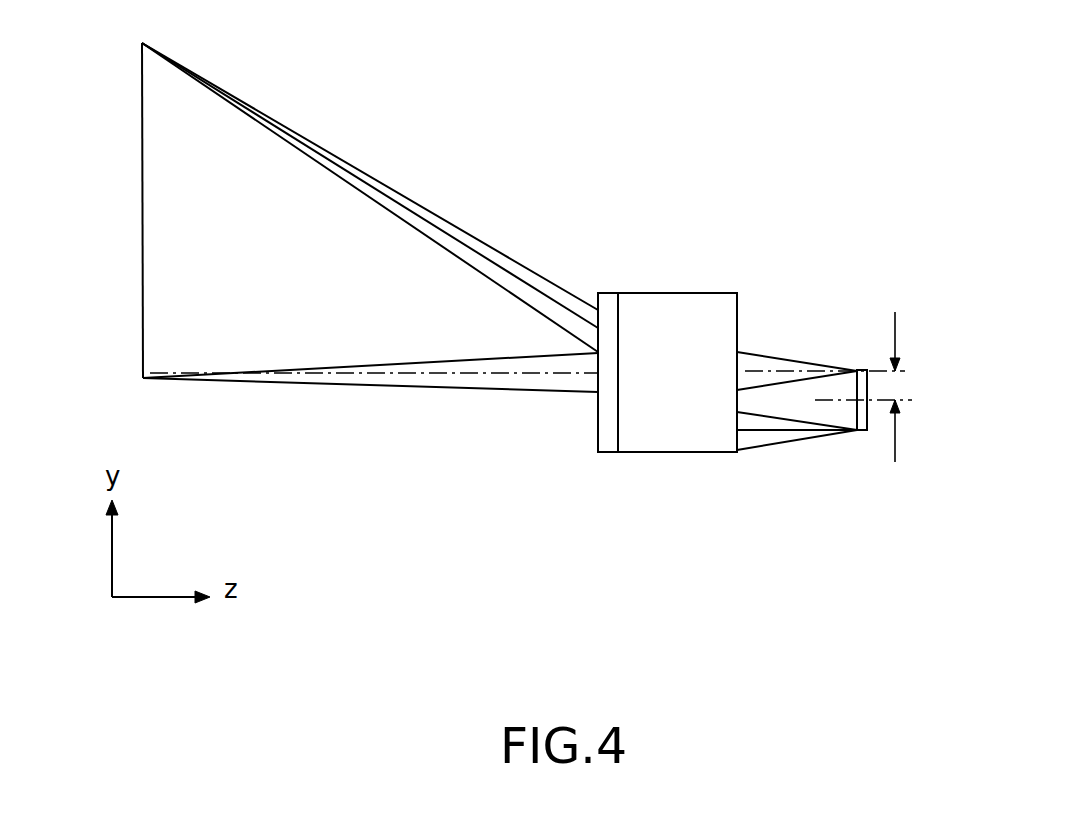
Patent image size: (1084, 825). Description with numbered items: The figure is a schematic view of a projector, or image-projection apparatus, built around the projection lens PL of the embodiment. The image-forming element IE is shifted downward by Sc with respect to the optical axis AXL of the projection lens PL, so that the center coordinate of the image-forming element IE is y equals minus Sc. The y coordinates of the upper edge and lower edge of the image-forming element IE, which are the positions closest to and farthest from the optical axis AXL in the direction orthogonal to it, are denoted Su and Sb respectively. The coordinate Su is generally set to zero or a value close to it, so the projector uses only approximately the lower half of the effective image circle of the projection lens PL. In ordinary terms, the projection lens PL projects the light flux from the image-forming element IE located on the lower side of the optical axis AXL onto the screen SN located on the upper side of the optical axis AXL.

The screen SN is at (142, 150).
The projection lens PL is at (657, 313).
The image-forming element IE is at (858, 370).
The optical axis AXL is at (767, 372).
The y coordinate of upper edge of image-forming element Su is at (910, 370).
The shift amount of image-forming element Sc is at (889, 395).
The y coordinate of lower edge of image-forming element Sb is at (866, 431).